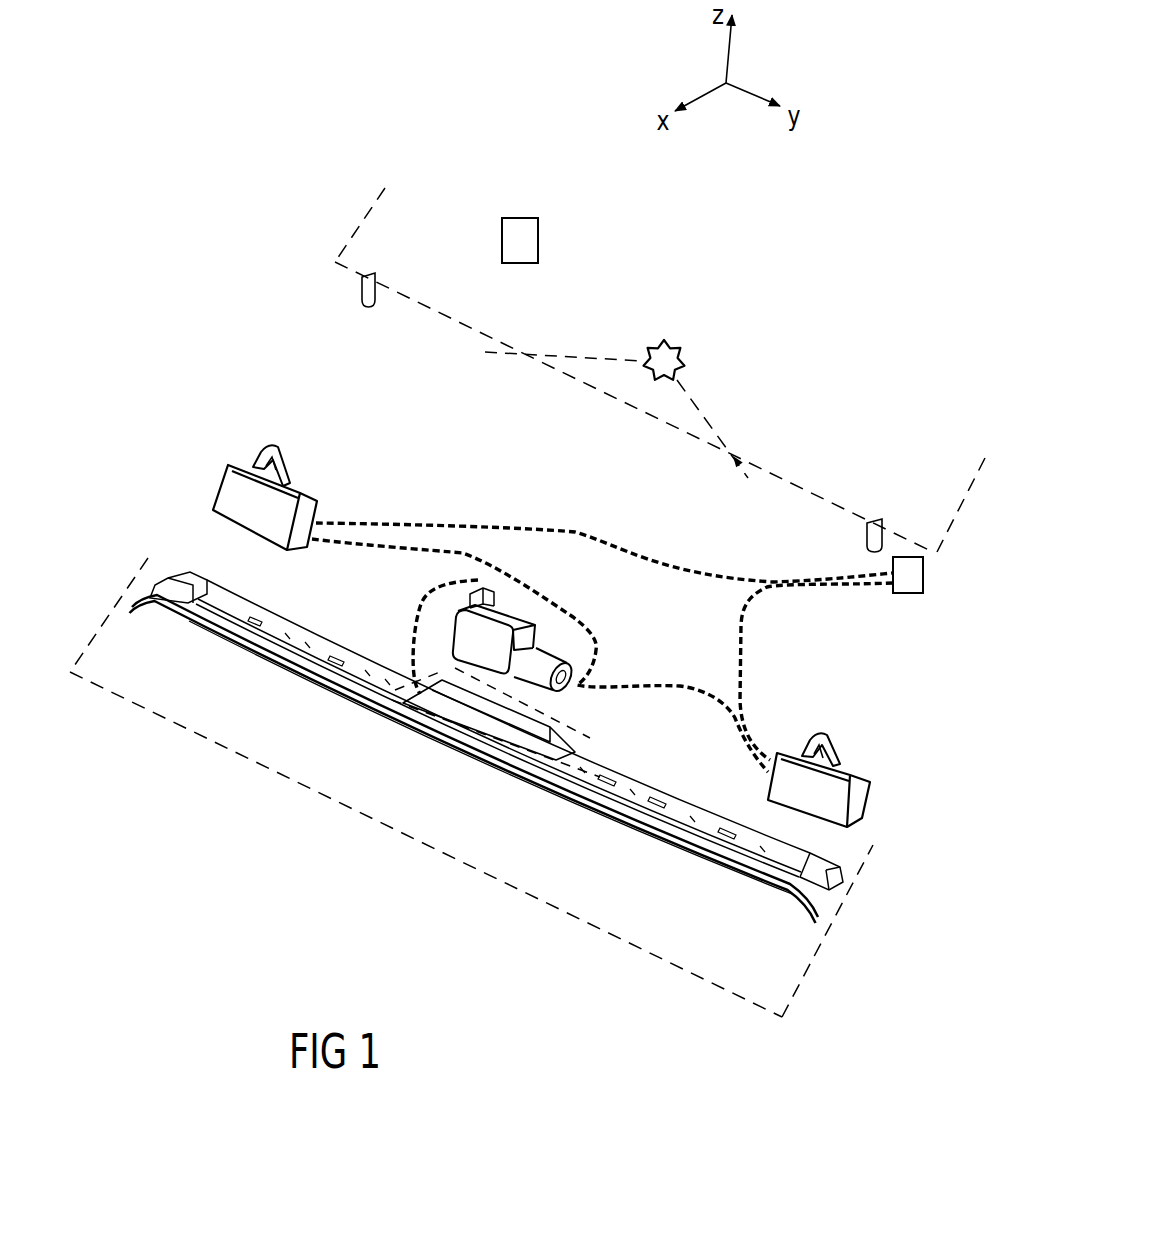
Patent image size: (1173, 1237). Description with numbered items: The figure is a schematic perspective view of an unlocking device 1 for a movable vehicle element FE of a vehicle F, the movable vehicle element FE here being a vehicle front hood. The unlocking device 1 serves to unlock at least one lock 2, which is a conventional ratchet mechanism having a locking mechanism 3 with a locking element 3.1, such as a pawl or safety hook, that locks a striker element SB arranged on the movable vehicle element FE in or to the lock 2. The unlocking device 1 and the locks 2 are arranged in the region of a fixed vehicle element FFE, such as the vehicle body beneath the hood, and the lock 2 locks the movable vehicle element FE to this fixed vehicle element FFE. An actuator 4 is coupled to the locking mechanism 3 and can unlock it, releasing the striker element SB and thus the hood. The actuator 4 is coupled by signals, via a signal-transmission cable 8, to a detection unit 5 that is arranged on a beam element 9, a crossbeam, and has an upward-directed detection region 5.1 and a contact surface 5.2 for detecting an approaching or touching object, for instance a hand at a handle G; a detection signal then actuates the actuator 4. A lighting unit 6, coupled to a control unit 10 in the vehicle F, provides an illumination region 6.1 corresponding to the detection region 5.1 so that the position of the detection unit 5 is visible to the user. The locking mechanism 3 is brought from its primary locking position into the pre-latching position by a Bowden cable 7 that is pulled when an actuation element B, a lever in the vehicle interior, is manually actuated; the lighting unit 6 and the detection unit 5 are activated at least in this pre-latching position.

The unlocking device 1 is at (790, 278).
The lock 2 is at (249, 460).
The locking mechanism 3 is at (284, 452).
The locking element 3.1 is at (278, 472).
The actuator 4 is at (511, 620).
The detection unit 5 is at (513, 733).
The detection region 5.1 is at (573, 757).
The contact surface 5.2 is at (409, 725).
The lighting unit 6 is at (672, 342).
The illumination region 6.1 is at (698, 403).
The Bowden cable 7 is at (607, 540).
The signal-transmission cable 8 is at (470, 577).
The beam element 9 is at (657, 830).
The control unit 10 is at (518, 218).
The actuation element B is at (908, 567).
The striker element SB is at (362, 287).
The vehicle F is at (333, 226).
The movable vehicle element FE is at (946, 552).
The fixed vehicle element FFE is at (808, 980).
The handle G is at (565, 391).